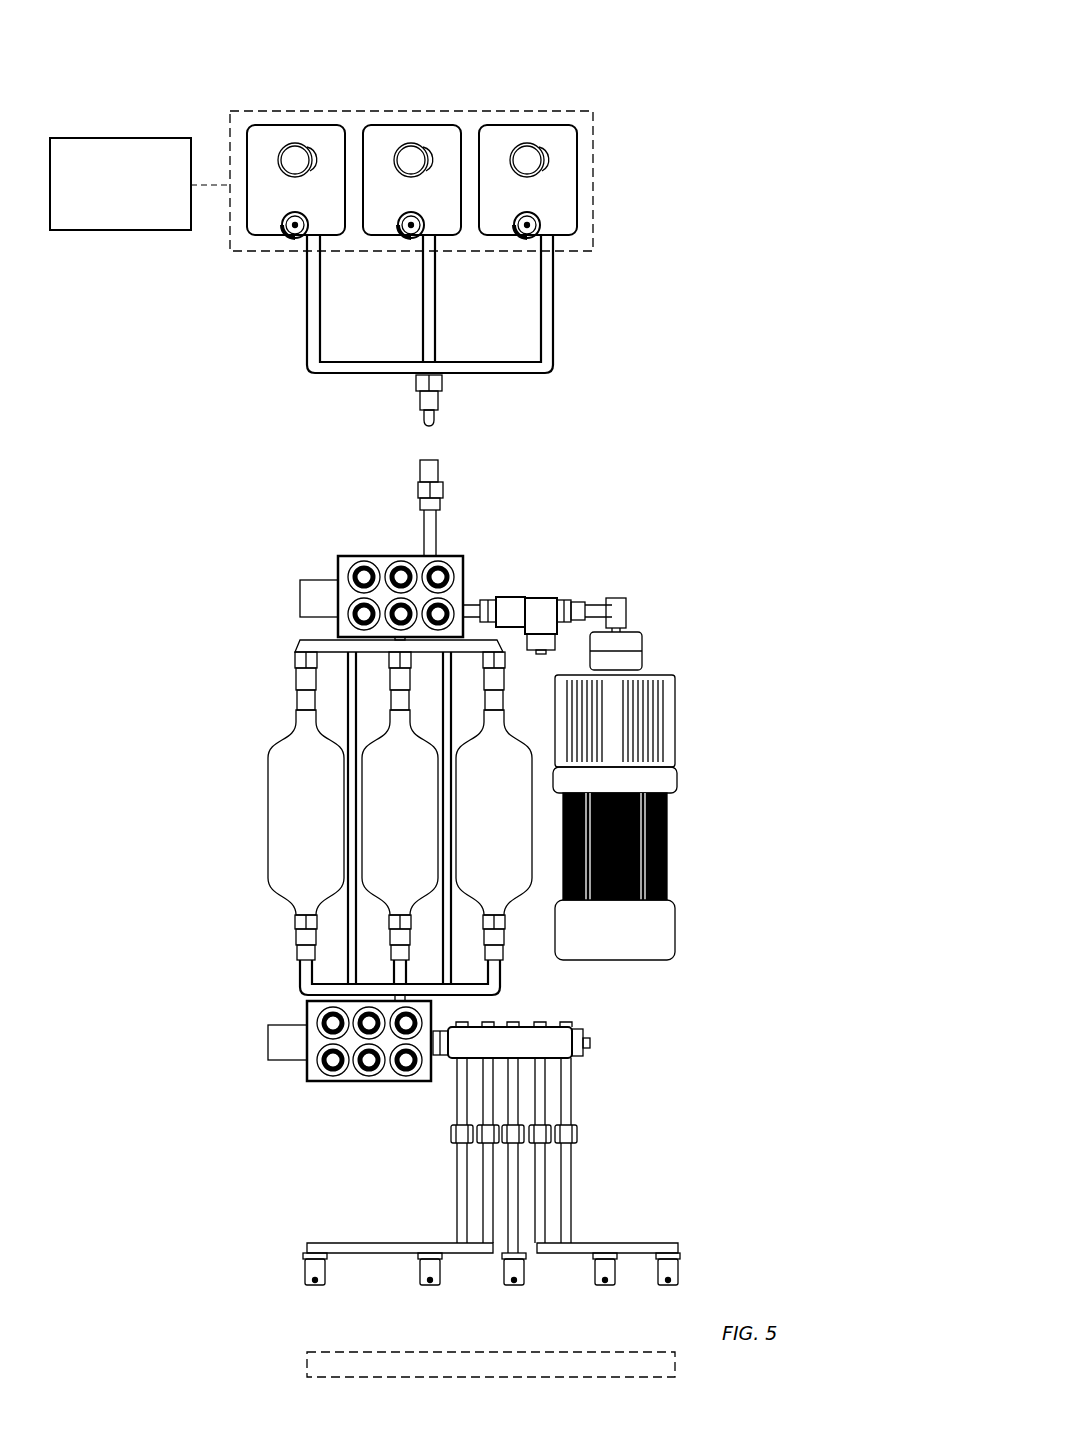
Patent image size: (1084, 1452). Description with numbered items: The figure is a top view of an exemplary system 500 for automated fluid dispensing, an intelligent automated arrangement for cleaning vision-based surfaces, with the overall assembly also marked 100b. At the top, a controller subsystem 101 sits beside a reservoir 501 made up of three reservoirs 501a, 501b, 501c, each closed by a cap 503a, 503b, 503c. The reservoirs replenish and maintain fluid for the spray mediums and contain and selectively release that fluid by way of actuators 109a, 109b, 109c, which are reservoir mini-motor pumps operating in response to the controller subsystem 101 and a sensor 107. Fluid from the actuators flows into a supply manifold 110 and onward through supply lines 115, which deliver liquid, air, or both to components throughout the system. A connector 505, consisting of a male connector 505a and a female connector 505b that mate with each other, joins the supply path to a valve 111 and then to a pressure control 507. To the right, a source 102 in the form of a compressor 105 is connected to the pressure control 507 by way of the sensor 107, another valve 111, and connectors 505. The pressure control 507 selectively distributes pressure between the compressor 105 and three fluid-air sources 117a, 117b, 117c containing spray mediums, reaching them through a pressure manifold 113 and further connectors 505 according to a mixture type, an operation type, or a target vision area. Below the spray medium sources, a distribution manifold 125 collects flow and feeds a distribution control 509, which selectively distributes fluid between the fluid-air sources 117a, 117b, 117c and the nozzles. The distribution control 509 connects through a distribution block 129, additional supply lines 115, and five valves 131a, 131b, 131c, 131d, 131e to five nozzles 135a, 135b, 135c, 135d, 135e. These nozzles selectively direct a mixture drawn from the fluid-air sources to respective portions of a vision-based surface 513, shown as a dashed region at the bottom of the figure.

The system 500 is at (126, 66).
The sprayer assembly 100b is at (204, 80).
The controller subsystem 101 is at (140, 184).
The reservoir 501 is at (230, 238).
The reservoir 501a is at (315, 125).
The reservoir 501b is at (408, 125).
The reservoir 501c is at (520, 125).
The cap 503a is at (312, 170).
The cap 503b is at (653, 168).
The cap 503c is at (653, 169).
The actuator 109a is at (303, 238).
The actuator 109b is at (650, 305).
The actuator 109c is at (650, 305).
The supply manifold 110 is at (553, 352).
The supply line 115 is at (303, 322).
The male connector 505a is at (423, 410).
The female connector 505b is at (418, 485).
The connector 505 is at (452, 402).
The valve 111 is at (442, 498).
The pressure control 507 is at (338, 565).
The pressure manifold 113 is at (310, 641).
The sensor 107 is at (545, 598).
The fluid-air source 117a is at (306, 812).
The fluid-air source 117b is at (400, 812).
The fluid-air source 117c is at (494, 812).
The source 102 is at (722, 796).
The compressor 105 is at (668, 857).
The distribution manifold 125 is at (300, 975).
The distribution control 509 is at (305, 1070).
The distribution block 129 is at (583, 1040).
The valve 131a is at (590, 1134).
The valve 131b is at (488, 1134).
The valve 131c is at (513, 1134).
The valve 131d is at (540, 1134).
The valve 131e is at (566, 1134).
The nozzle 135a is at (686, 1286).
The nozzle 135b is at (430, 1269).
The nozzle 135c is at (514, 1269).
The nozzle 135d is at (605, 1269).
The nozzle 135e is at (668, 1269).
The vision-based surface 513 is at (380, 1352).